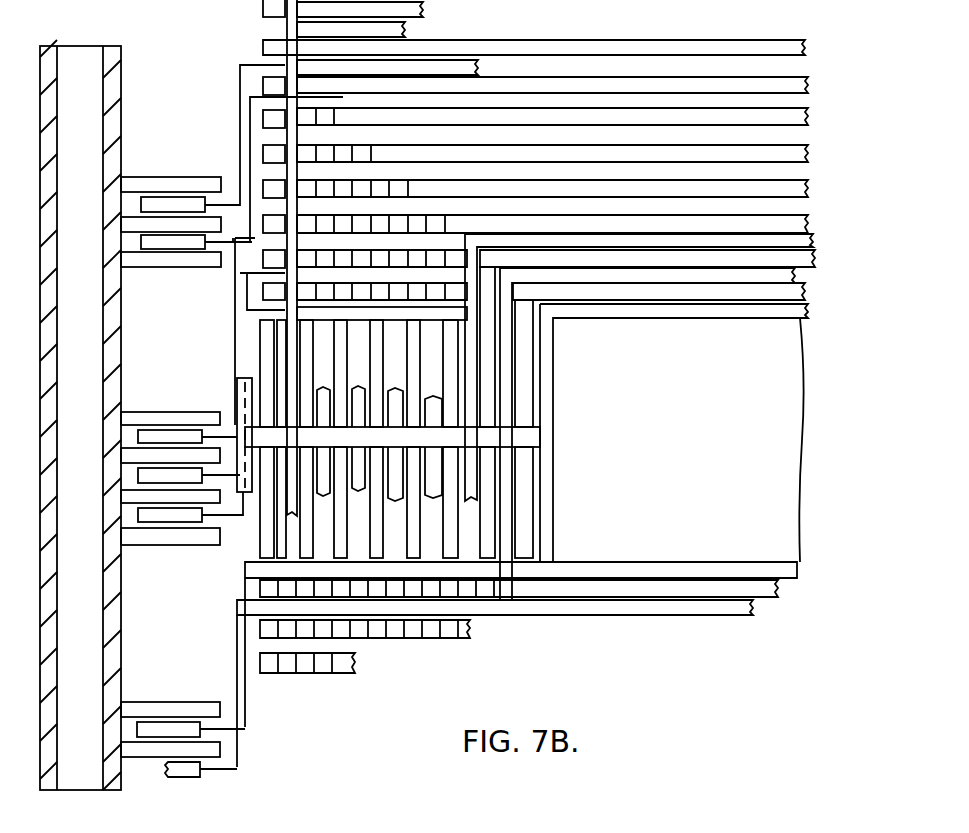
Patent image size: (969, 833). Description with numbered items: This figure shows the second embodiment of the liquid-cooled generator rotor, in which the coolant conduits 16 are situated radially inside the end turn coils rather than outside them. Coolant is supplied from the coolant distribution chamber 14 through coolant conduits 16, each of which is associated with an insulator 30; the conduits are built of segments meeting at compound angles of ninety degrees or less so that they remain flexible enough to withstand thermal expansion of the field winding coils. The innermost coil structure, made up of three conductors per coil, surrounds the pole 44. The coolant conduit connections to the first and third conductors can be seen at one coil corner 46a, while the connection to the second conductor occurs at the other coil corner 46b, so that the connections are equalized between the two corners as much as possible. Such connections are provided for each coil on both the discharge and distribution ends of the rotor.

The coolant distribution chamber 14 is at (65, 562).
The coolant conduit 16 is at (243, 654).
The insulator 30 is at (180, 770).
The pole 44 is at (772, 396).
The coil corner 46a is at (548, 318).
The coil corner 46b is at (548, 563).